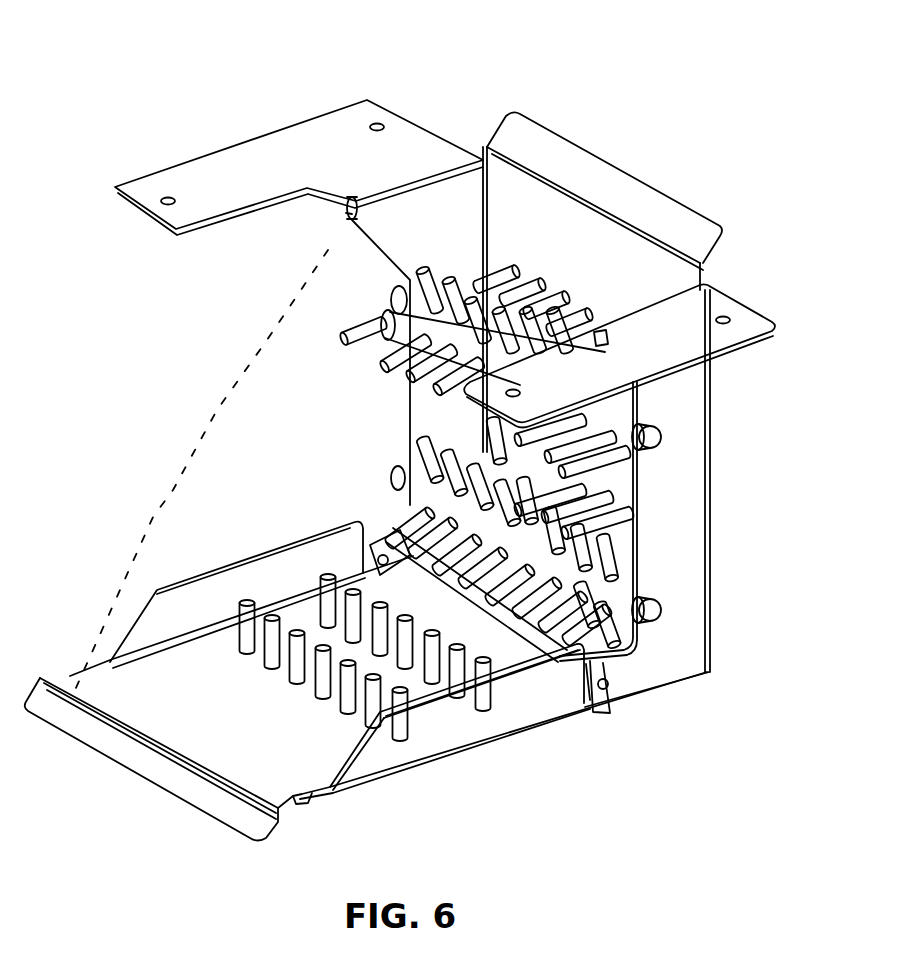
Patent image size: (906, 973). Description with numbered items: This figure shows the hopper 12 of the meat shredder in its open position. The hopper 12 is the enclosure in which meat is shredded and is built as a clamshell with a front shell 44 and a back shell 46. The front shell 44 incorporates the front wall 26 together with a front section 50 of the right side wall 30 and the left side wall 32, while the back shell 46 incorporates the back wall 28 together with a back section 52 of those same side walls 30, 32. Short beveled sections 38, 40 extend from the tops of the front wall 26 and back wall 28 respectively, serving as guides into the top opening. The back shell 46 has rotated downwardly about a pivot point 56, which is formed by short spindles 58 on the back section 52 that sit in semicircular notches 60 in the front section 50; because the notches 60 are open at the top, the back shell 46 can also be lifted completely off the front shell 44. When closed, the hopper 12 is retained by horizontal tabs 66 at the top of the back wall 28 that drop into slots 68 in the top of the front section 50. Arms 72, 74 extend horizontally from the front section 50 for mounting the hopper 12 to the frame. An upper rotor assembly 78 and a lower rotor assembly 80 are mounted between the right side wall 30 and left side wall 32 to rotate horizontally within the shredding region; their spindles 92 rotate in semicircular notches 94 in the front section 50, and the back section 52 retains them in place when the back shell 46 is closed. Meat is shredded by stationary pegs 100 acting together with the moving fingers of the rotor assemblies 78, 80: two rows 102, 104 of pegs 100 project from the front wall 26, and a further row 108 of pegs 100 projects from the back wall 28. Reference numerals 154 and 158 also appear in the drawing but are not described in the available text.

The hopper 12 is at (282, 66).
The front wall 26 is at (531, 226).
The back wall 28 is at (196, 713).
The right side wall 30 is at (426, 221).
The left side wall 32 is at (672, 513).
The beveled section 38 is at (623, 170).
The beveled section 40 is at (160, 785).
The front shell 44 is at (716, 577).
The back shell 46 is at (459, 752).
The front section 50 is at (693, 662).
The back section 52 is at (213, 567).
The pivot point 56 is at (620, 676).
The spindle 58 is at (606, 690).
The notch 60 is at (588, 703).
The tab 66 is at (75, 664).
The slot 68 is at (358, 200).
The arm 72 is at (232, 148).
The arm 74 is at (740, 350).
The upper rotor assembly 78 is at (415, 330).
The lower rotor assembly 80 is at (385, 522).
The spindle 92 is at (392, 296).
The notch 94 is at (655, 426).
The peg 100 is at (522, 286).
The row of pegs 102 is at (598, 294).
The row of pegs 104 is at (250, 661).
The row of pegs 108 is at (425, 620).
The mounting hole 154 is at (385, 127).
The hinge pin 158 is at (340, 204).